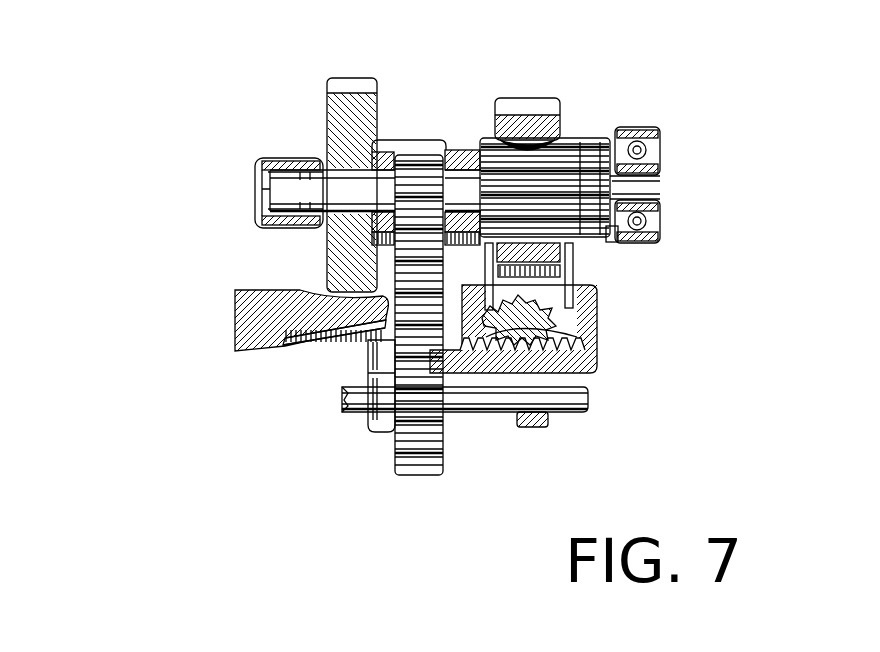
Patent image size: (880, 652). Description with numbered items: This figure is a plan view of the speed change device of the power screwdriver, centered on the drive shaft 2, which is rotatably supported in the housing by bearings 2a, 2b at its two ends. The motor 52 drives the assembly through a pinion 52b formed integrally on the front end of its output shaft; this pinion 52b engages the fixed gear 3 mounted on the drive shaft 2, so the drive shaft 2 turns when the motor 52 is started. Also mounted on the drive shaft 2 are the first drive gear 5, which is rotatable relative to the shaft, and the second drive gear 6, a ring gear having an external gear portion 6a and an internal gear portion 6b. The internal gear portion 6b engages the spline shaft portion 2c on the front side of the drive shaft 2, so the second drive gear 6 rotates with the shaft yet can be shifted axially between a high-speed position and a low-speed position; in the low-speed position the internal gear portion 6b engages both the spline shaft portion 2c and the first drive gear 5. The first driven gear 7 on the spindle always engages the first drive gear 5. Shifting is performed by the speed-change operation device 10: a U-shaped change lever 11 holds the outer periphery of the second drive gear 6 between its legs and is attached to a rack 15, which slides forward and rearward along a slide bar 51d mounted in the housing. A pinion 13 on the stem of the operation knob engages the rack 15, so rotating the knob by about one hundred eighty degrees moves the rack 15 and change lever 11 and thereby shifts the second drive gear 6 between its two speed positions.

The drive shaft 2 is at (330, 236).
The bearing 2a is at (632, 128).
The bearing 2b is at (280, 160).
The spline shaft portion 2c is at (610, 240).
The fixed gear 3 is at (347, 100).
The first drive gear 5 is at (464, 160).
The second drive gear 6 is at (545, 157).
The external gear portion 6a is at (510, 135).
The internal gear portion 6b is at (588, 140).
The first driven gear 7 is at (410, 442).
The speed-change operation device 10 is at (636, 338).
The change lever 11 is at (574, 264).
The pinion 13 is at (552, 322).
The rack 15 is at (492, 410).
The slide bar 51d is at (463, 410).
The motor 52 is at (260, 385).
The pinion 52b is at (317, 338).